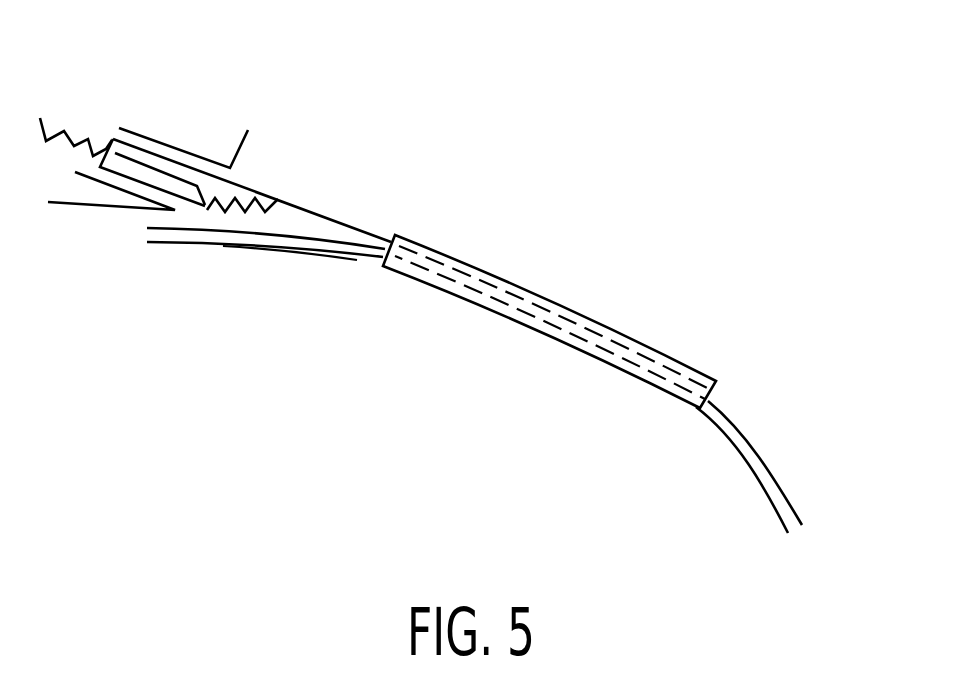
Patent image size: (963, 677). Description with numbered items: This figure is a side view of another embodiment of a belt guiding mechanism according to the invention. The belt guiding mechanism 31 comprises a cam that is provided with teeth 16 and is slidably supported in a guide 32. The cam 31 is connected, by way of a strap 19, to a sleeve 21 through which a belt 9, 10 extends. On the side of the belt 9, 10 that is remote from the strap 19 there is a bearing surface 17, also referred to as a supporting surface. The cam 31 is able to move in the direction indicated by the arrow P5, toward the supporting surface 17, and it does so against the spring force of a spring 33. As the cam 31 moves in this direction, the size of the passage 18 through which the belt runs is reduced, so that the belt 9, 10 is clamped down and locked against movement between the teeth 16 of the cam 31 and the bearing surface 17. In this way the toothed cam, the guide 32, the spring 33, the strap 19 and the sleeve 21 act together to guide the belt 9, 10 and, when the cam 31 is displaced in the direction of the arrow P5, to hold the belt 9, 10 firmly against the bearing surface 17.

The belt 9 is at (796, 457).
The belt 10 is at (752, 442).
The teeth 16 is at (215, 208).
The bearing surface 17 is at (363, 260).
The passage 18 is at (247, 222).
The strap 19 is at (357, 228).
The sleeve 21 is at (647, 336).
The belt guiding mechanism 31 is at (130, 167).
The guide 32 is at (162, 170).
The spring 33 is at (79, 138).
The arrow P5 is at (180, 181).